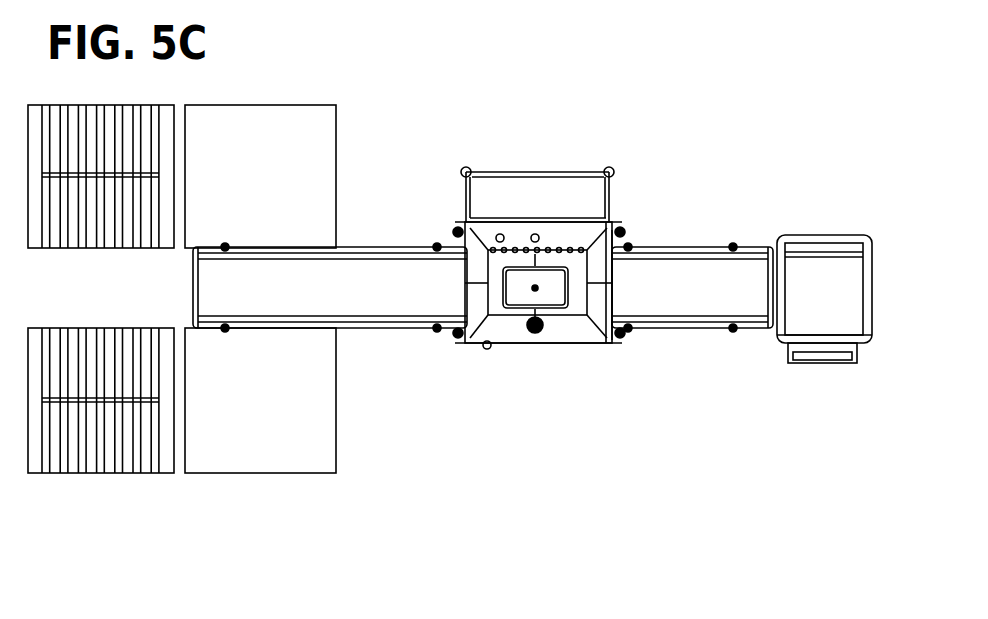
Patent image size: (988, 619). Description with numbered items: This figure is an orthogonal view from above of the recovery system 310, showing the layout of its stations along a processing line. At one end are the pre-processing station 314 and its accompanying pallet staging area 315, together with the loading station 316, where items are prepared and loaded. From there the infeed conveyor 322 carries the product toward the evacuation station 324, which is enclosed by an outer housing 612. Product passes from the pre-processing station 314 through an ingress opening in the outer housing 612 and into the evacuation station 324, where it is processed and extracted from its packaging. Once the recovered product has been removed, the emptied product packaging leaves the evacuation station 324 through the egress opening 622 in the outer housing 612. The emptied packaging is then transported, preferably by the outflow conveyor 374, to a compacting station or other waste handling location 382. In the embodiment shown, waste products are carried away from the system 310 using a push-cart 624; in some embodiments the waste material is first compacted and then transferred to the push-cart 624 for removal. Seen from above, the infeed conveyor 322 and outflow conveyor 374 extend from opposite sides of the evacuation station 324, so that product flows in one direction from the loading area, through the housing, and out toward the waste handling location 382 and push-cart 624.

The system 310 is at (547, 257).
The pre-processing station 314 is at (274, 74).
The pallet staging area 315 is at (98, 487).
The loading station 316 is at (253, 457).
The infeed conveyor 322 is at (400, 288).
The evacuation station 324 is at (518, 128).
The outflow conveyor 374 is at (693, 288).
The waste handling location 382 is at (809, 195).
The outer housing 612 is at (565, 323).
The egress opening 622 is at (629, 277).
The push-cart 624 is at (787, 347).